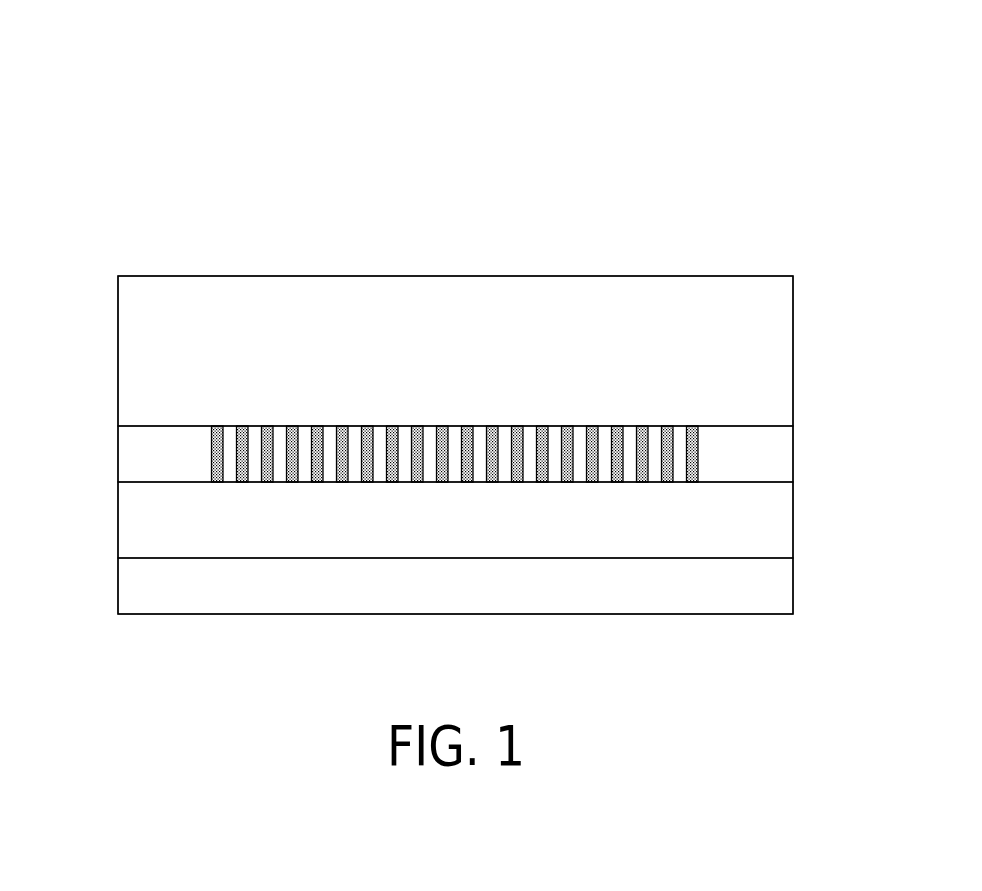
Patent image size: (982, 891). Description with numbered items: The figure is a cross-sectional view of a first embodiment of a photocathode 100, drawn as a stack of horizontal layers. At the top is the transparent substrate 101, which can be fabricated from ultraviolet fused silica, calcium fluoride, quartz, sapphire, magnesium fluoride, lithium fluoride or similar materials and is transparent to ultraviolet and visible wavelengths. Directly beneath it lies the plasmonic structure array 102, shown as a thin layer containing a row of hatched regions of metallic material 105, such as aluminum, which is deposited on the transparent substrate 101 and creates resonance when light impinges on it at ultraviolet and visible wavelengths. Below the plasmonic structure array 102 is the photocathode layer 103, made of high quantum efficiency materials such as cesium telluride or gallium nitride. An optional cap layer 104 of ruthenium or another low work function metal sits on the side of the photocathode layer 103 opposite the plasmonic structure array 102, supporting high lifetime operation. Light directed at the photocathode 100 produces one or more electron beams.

The photocathode 100 is at (192, 142).
The transparent substrate 101 is at (437, 361).
The plasmonic structure array 102 is at (793, 461).
The photocathode layer 103 is at (437, 531).
The cap layer 104 is at (437, 597).
The metallic material 105 is at (211, 457).